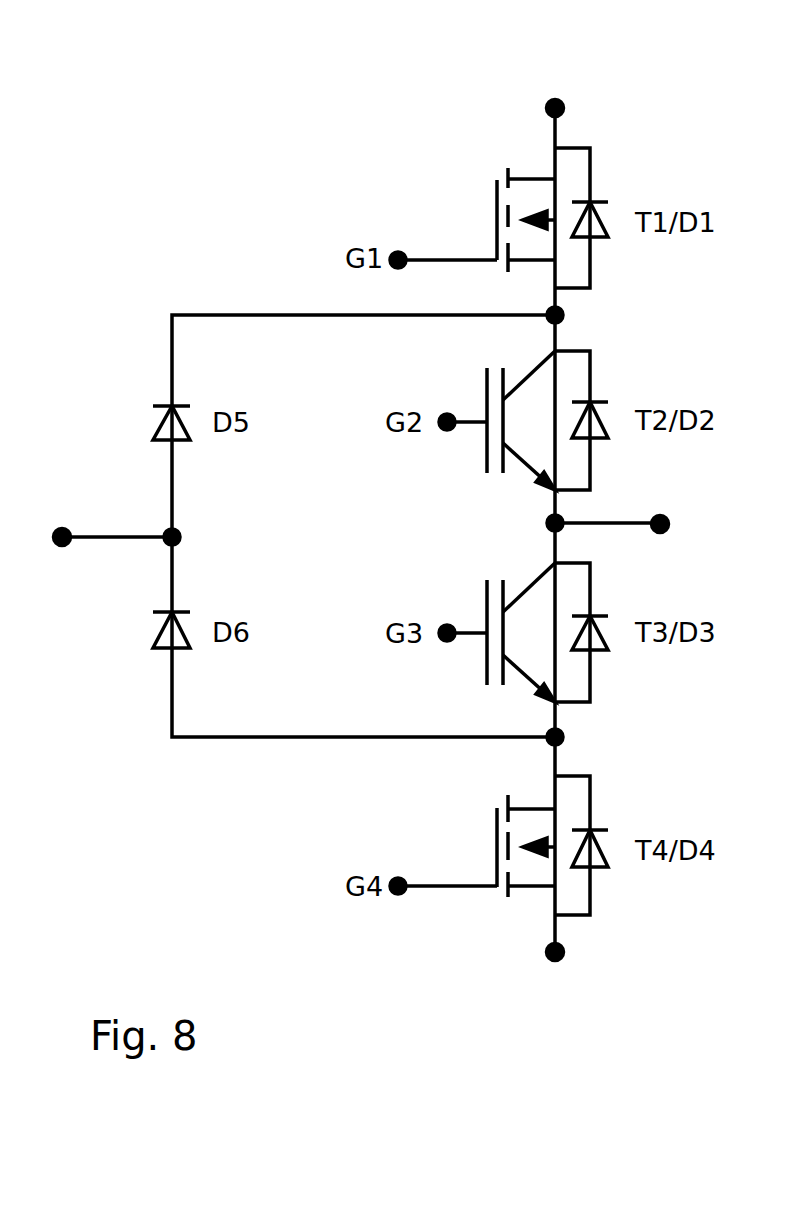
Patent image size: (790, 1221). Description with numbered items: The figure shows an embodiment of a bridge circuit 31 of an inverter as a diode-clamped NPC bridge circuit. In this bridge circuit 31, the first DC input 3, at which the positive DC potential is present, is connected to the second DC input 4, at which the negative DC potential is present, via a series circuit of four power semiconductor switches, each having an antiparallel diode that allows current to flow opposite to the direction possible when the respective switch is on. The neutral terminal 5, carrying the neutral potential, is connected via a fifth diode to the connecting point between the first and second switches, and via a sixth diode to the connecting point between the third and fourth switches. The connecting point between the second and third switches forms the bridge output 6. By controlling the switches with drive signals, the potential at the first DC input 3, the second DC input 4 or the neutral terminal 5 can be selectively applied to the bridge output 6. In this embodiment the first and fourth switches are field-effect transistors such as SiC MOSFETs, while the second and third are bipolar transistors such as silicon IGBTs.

The first DC input 3 is at (552, 98).
The second DC input 4 is at (553, 962).
The neutral terminal 5 is at (58, 523).
The bridge output 6 is at (668, 512).
The bridge circuit 31 is at (232, 98).